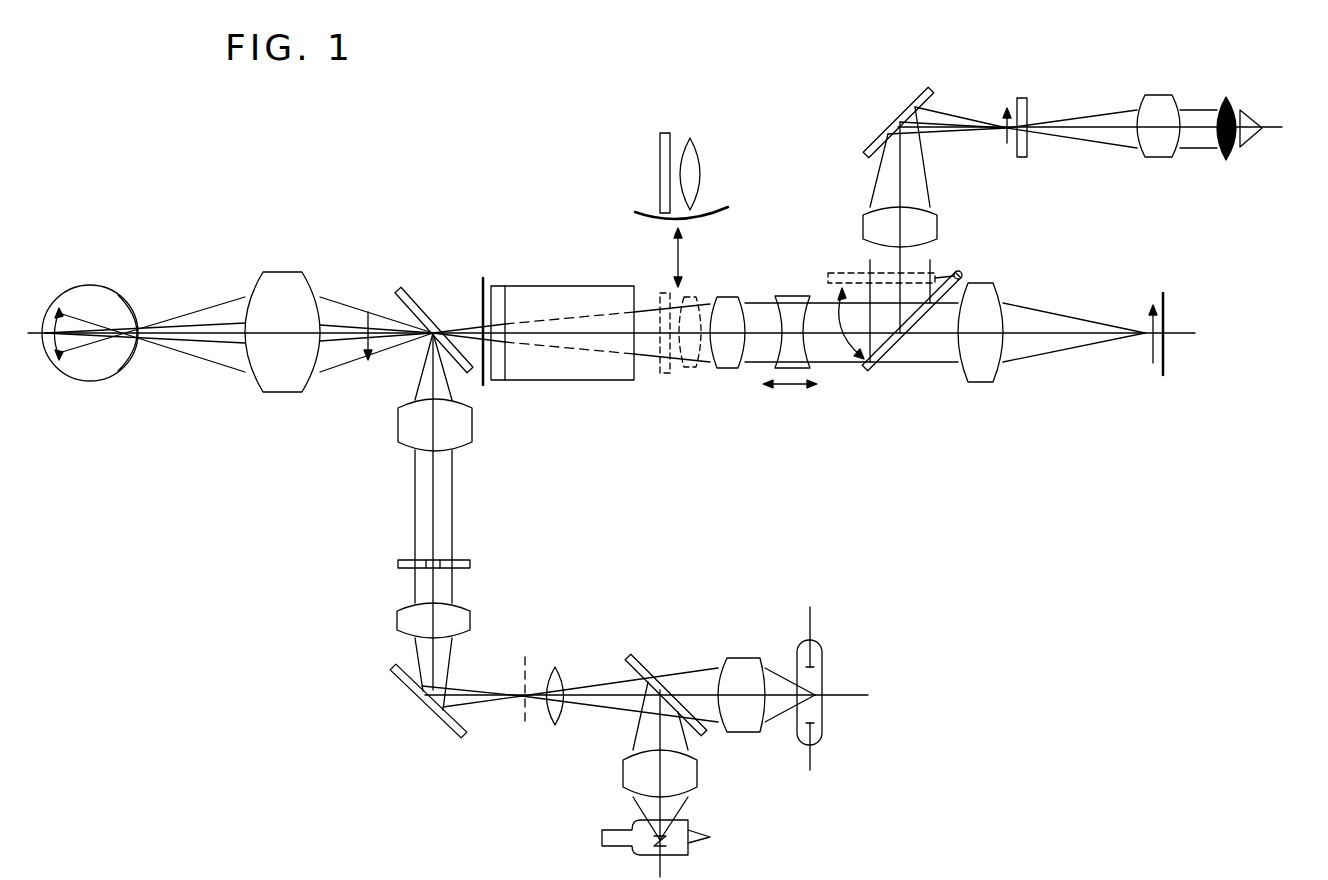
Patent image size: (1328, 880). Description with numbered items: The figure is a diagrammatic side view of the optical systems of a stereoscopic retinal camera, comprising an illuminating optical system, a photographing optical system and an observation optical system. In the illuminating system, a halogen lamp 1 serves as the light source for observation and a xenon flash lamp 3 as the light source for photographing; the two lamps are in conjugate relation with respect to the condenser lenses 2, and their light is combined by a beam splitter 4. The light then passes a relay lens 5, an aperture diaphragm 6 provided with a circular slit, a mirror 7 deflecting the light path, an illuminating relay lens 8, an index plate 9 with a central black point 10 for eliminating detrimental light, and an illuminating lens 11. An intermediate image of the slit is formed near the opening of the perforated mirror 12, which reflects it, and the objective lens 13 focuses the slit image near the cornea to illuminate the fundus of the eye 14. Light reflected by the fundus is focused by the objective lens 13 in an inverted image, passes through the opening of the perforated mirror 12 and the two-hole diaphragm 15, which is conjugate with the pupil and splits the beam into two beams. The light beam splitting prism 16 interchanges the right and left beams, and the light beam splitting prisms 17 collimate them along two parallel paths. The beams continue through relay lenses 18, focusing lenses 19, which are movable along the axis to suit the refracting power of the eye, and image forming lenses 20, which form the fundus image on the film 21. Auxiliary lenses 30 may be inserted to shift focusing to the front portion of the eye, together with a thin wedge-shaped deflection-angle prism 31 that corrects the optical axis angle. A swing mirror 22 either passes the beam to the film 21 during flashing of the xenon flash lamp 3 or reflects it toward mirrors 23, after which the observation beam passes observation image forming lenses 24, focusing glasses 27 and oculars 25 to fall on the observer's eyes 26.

The halogen lamp 1 is at (690, 845).
The condenser lenses 2 is at (697, 768).
The xenon flash lamp 3 is at (825, 712).
The beam splitter 4 is at (640, 660).
The relay lens 5 is at (557, 725).
The aperture diaphragm 6 is at (528, 660).
The mirror 7 is at (418, 698).
The illuminating relay lens 8 is at (397, 620).
The index plate 9 is at (398, 564).
The central black point 10 is at (433, 560).
The illuminating lens 11 is at (398, 425).
The perforated mirror 12 is at (400, 290).
The objective lens 13 is at (262, 285).
The eye 14 is at (90, 290).
The two-hole diaphragm 15 is at (481, 290).
The light beam splitting prism 16 is at (493, 380).
The light beam splitting prisms 17 is at (545, 286).
The relay lenses 18 is at (727, 368).
The focusing lenses 19 is at (793, 296).
The image forming lenses 20 is at (983, 382).
The film 21 is at (1185, 357).
The swing mirror 22 is at (878, 376).
The mirrors 23 is at (873, 137).
The observation image forming lenses 24 is at (937, 232).
The oculars 25 is at (1160, 157).
The observer's eyes 26 is at (1237, 120).
The focusing glasses 27 is at (1022, 98).
The auxiliary lenses 30 is at (703, 168).
The deflection-angle prism 31 is at (658, 165).